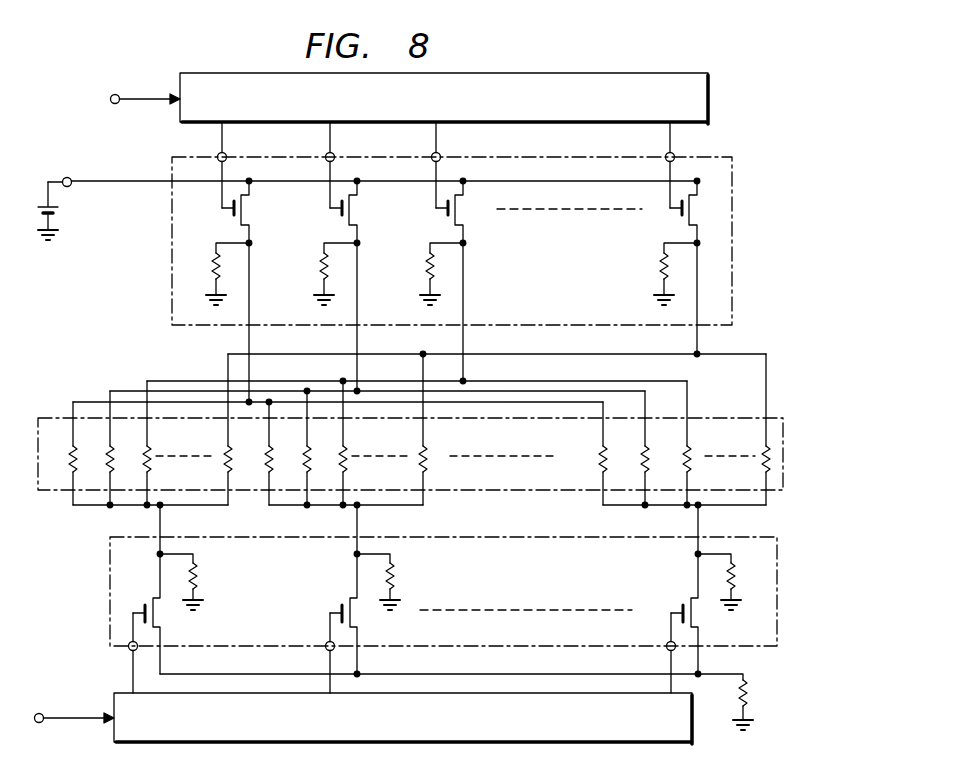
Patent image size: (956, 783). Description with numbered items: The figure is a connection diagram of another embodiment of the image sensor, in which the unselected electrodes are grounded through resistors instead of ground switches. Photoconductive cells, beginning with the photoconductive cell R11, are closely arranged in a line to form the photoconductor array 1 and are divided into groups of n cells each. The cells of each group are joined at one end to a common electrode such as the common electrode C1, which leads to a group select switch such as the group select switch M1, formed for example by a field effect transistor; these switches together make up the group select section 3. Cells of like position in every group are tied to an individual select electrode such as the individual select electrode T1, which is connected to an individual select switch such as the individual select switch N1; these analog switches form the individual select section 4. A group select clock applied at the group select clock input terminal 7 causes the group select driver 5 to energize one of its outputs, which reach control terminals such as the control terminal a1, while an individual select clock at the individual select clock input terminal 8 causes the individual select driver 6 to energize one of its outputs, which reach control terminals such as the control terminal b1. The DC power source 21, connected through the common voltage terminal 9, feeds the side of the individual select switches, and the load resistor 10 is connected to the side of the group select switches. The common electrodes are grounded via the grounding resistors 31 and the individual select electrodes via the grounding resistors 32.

The photoconductor array 1 is at (44, 418).
The group select section 3 is at (110, 553).
The individual select section 4 is at (172, 298).
The group select driver 5 is at (692, 706).
The individual select driver 6 is at (708, 85).
The group select clock input terminal 7 is at (41, 713).
The individual select clock input terminal 8 is at (110, 99).
The common voltage terminal 9 is at (66, 177).
The load resistor 10 is at (747, 702).
The DC power source 21 is at (60, 209).
The grounding resistors 31 is at (197, 582).
The grounding resistors 32 is at (213, 268).
The individual select switch N1 is at (244, 212).
The group select switch M1 is at (155, 617).
The photoconductive cell R11 is at (69, 458).
The individual select electrode T1 is at (482, 400).
The common electrode C1 is at (188, 507).
The control terminal b1 is at (226, 155).
The control terminal a1 is at (129, 650).